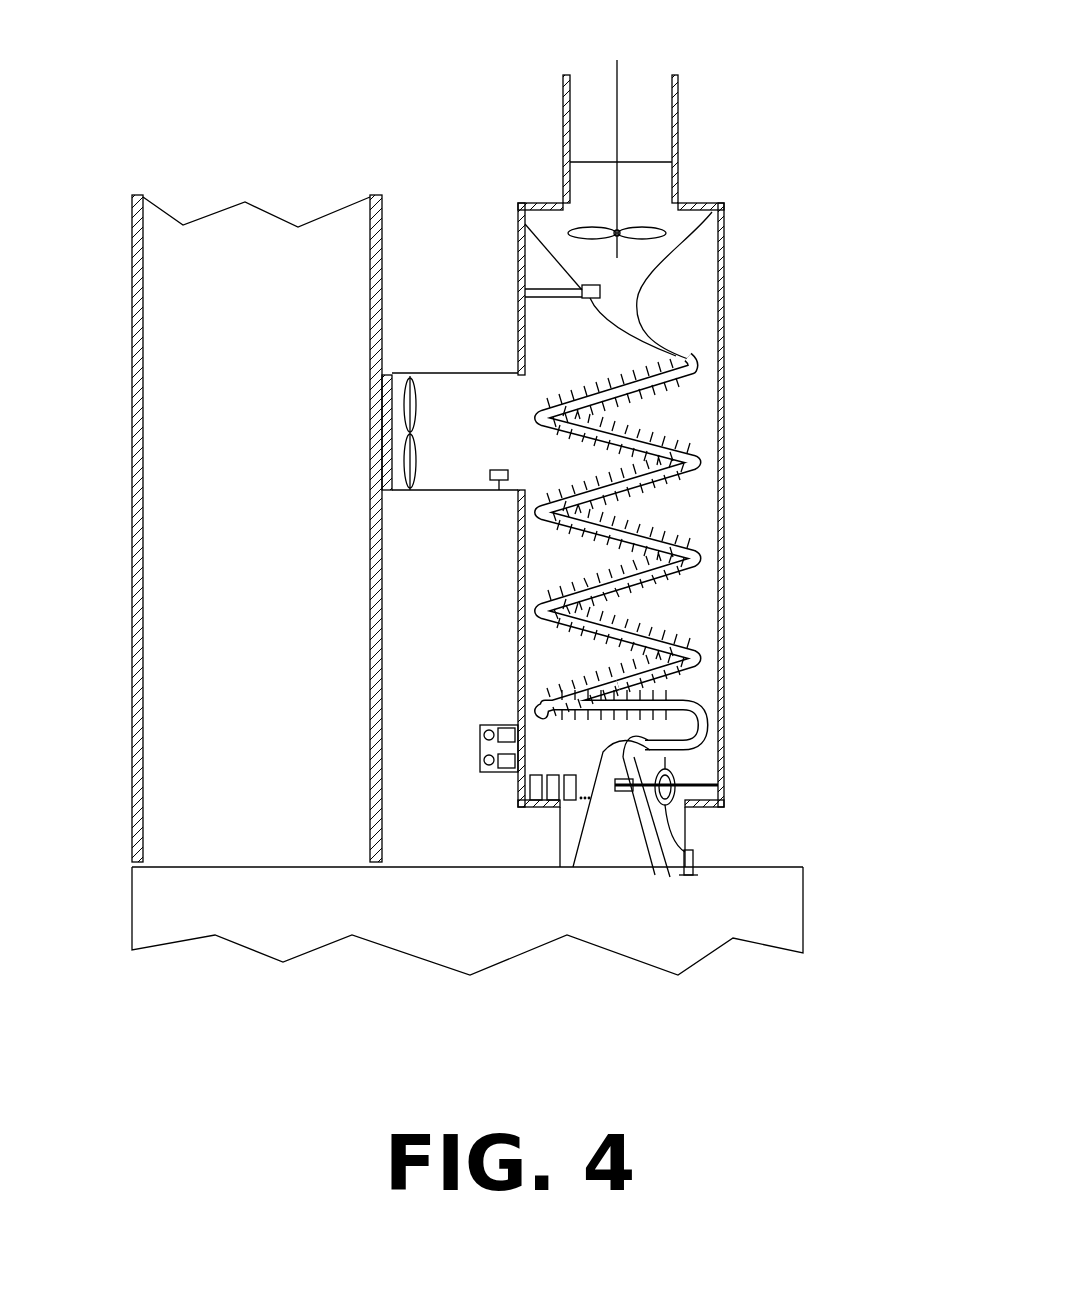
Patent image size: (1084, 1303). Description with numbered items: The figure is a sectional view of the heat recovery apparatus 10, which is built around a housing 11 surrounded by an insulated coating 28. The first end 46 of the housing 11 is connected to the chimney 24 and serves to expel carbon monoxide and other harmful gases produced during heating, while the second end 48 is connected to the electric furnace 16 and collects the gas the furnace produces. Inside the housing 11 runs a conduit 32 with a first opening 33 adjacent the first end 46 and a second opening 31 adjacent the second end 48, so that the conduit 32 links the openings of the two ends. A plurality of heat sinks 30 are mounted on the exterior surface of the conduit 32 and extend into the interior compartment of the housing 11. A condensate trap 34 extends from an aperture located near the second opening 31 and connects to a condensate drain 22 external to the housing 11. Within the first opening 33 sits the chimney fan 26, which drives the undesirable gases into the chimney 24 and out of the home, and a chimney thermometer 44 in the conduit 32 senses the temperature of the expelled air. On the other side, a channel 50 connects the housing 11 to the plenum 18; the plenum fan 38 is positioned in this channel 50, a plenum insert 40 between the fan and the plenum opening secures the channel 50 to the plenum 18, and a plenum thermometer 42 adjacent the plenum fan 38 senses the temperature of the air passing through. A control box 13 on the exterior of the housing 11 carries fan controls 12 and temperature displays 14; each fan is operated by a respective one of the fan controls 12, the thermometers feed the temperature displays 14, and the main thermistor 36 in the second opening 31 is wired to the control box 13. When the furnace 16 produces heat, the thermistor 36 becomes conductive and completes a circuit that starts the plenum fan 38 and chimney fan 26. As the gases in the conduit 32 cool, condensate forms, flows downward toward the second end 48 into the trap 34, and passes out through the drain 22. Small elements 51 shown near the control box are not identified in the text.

The heat recovery apparatus 10 is at (845, 119).
The housing 11 is at (724, 312).
The fan controls 12 is at (484, 761).
The control box 13 is at (500, 723).
The temperature displays 14 is at (502, 727).
The electric furnace 16 is at (485, 925).
The plenum 18 is at (190, 490).
The condensate drain 22 is at (697, 873).
The chimney 24 is at (678, 107).
The chimney fan 26 is at (667, 232).
The insulated coating 28 is at (722, 412).
The heat sinks 30 is at (684, 580).
The second opening 31 is at (626, 853).
The conduit 32 is at (692, 647).
The first opening 33 is at (620, 141).
The condensate trap 34 is at (676, 781).
The main thermistor 36 is at (662, 880).
The plenum fan 38 is at (403, 408).
The plenum insert 40 is at (384, 388).
The plenum thermometer 42 is at (497, 468).
The chimney thermometer 44 is at (588, 288).
The first end 46 is at (697, 206).
The second end 48 is at (713, 810).
The channel 50 is at (467, 493).
The control elements 51 is at (532, 790).